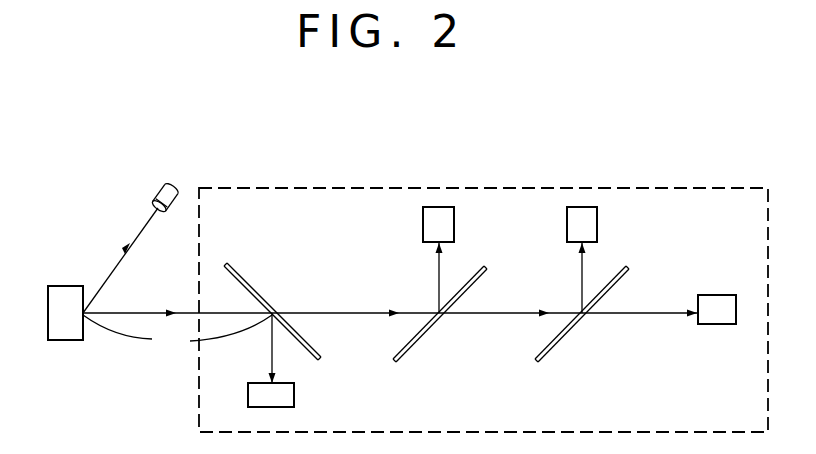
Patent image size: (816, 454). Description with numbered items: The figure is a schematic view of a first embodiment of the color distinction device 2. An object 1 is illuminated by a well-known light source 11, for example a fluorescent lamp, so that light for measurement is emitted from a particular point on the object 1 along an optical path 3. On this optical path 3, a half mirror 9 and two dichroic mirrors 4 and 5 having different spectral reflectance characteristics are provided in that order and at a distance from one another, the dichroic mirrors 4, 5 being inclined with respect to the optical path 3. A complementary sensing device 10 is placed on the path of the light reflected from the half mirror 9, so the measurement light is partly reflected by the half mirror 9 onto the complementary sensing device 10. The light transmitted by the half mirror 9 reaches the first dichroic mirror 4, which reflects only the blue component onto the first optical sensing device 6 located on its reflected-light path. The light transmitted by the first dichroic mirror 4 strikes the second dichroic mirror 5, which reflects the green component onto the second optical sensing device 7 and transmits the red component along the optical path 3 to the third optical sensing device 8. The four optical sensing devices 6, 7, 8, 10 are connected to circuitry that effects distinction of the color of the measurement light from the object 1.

The object 1 is at (57, 340).
The color distinction device 2 is at (344, 188).
The optical path 3 is at (363, 313).
The first dichroic mirror 4 is at (470, 273).
The second dichroic mirror 5 is at (615, 273).
The first optical sensing device 6 is at (441, 207).
The second optical sensing device 7 is at (596, 215).
The third optical sensing device 8 is at (700, 320).
The half mirror 9 is at (243, 275).
The complementary sensing device 10 is at (294, 395).
The light source 11 is at (164, 190).